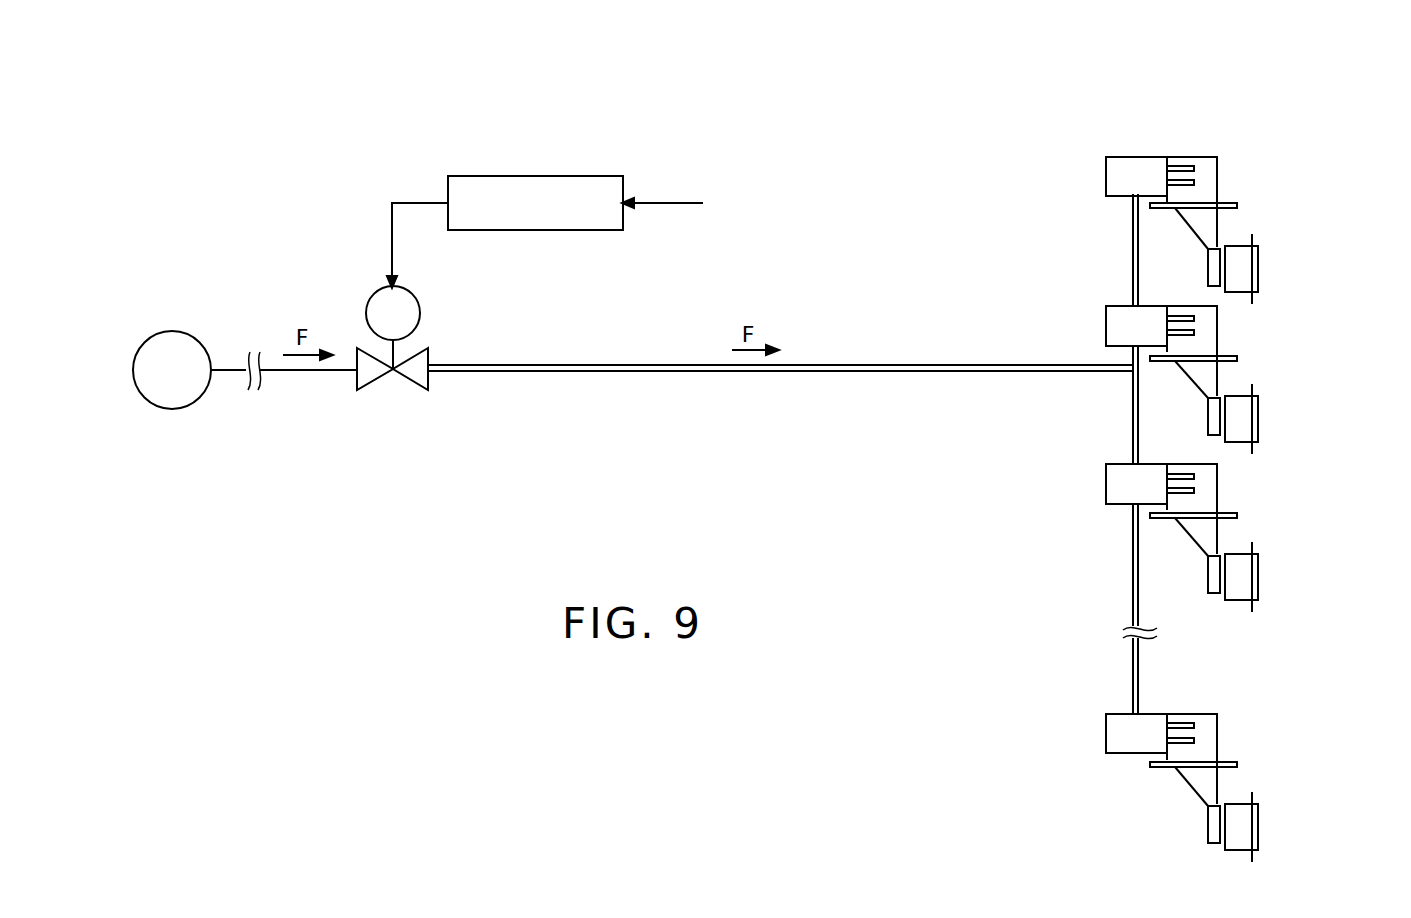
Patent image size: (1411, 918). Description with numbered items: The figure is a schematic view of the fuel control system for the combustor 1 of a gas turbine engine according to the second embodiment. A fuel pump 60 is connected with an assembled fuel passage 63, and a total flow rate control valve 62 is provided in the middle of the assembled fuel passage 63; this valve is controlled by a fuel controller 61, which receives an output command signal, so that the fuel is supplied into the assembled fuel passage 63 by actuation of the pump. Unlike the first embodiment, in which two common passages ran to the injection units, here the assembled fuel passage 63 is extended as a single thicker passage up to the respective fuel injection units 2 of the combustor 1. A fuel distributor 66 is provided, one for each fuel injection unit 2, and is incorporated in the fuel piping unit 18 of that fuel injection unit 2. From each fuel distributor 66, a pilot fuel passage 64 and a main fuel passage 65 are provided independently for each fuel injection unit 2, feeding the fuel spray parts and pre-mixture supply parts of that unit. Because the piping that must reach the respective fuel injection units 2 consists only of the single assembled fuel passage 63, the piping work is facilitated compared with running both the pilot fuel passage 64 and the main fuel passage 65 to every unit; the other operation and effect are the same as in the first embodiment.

The combustor 1 is at (1066, 158).
The fuel injection unit 2 is at (1292, 229).
The fuel piping unit 18 is at (1210, 167).
The fuel pump 60 is at (172, 331).
The fuel controller 61 is at (538, 176).
The total flow rate control valve 62 is at (368, 300).
The assembled fuel passage 63 is at (601, 372).
The pilot fuel passage 64 is at (1182, 166).
The main fuel passage 65 is at (1194, 183).
The fuel distributor 66 is at (1137, 168).